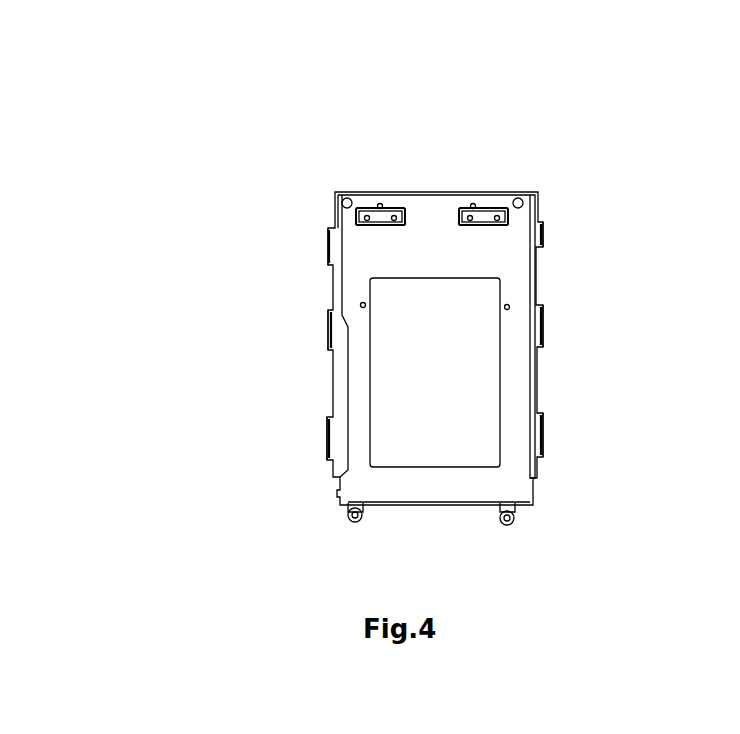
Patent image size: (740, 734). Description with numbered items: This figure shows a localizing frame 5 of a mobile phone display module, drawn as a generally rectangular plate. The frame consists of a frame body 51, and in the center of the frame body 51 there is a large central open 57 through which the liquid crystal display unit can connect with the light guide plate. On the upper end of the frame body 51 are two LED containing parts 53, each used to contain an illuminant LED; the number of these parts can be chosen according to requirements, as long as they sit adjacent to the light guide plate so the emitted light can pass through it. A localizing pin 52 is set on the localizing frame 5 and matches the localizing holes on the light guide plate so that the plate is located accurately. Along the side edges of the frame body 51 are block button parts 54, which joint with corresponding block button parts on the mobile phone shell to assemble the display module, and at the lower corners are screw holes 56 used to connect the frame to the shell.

The localizing frame 5 is at (230, 222).
The frame body 51 is at (481, 381).
The localizing pin 52 is at (366, 306).
The LED containing part 53 is at (388, 223).
The block button part 54 is at (328, 417).
The screw hole 56 is at (500, 522).
The central open 57 is at (403, 401).